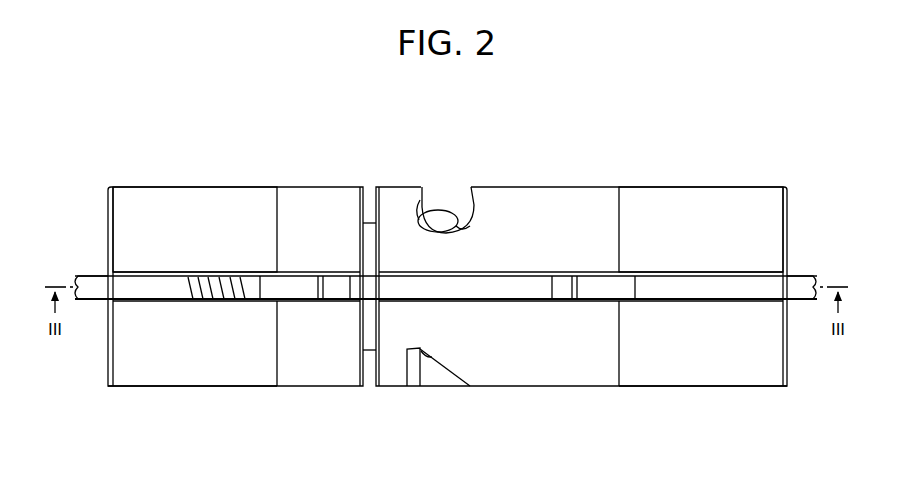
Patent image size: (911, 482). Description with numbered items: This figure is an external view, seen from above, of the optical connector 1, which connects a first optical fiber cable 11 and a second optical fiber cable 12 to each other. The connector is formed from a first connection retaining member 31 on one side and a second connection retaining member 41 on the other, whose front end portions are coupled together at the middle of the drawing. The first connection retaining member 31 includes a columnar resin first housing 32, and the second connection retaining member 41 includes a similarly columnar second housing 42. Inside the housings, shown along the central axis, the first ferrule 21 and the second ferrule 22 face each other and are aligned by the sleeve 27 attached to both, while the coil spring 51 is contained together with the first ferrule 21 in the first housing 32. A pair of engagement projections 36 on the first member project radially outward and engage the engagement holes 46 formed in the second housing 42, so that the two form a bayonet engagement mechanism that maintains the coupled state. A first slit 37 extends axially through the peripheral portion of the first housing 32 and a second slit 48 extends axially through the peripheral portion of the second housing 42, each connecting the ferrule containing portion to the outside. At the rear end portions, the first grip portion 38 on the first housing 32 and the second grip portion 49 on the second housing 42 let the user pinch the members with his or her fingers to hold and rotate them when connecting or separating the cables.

The optical connector 1 is at (366, 117).
The first optical fiber cable 11 is at (90, 287).
The second optical fiber cable 12 is at (800, 287).
The first ferrule 21 is at (295, 291).
The second ferrule 22 is at (594, 291).
The sleeve 27 is at (466, 288).
The first connection retaining member 31 is at (161, 176).
The first housing 32 is at (215, 198).
The engagement projections 36 is at (436, 215).
The first slit 37 is at (180, 291).
The first grip portion 38 is at (133, 387).
The second connection retaining member 41 is at (735, 179).
The second housing 42 is at (679, 200).
The engagement holes 46 is at (435, 213).
The second slit 48 is at (668, 296).
The second grip portion 49 is at (757, 387).
The coil spring 51 is at (236, 285).